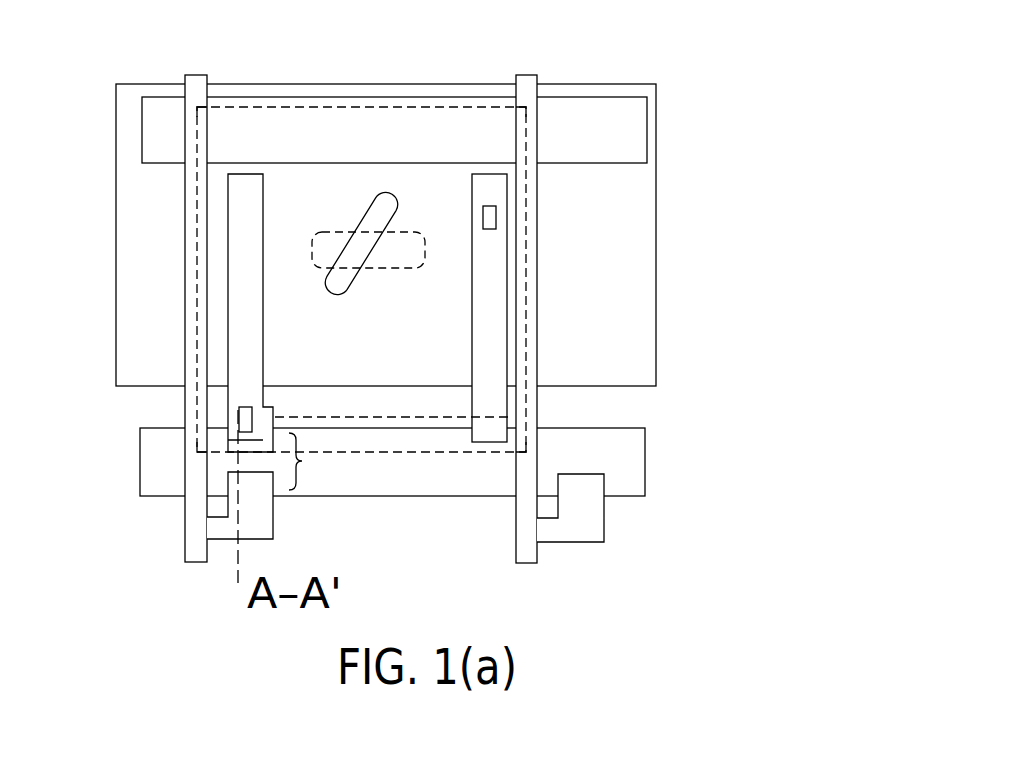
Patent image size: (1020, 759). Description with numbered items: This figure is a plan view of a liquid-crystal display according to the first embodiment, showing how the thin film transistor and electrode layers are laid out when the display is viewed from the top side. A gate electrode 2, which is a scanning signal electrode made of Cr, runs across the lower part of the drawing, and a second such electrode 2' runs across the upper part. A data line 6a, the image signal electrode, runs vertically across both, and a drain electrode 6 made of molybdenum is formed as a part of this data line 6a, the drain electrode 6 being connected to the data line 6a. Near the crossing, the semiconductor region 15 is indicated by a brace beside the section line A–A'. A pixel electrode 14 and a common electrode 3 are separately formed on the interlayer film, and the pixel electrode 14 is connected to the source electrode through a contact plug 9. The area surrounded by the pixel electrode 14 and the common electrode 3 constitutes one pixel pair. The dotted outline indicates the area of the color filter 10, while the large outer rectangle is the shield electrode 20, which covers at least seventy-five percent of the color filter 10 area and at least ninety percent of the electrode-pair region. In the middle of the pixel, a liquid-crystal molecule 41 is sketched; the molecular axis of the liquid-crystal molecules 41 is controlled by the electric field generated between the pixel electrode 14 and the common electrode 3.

The gate electrode 2 is at (425, 461).
The adjacent gate line 2' is at (440, 130).
The common electrode 3 is at (478, 174).
The drain electrode 6 is at (275, 523).
The data line 6a is at (199, 80).
The contact plug 9 is at (240, 410).
The color filter 10 is at (360, 107).
The pixel electrode 14 is at (253, 178).
The semiconductor layer 15 is at (303, 461).
The shield electrode 20 is at (633, 326).
The liquid-crystal molecules 41 is at (413, 306).